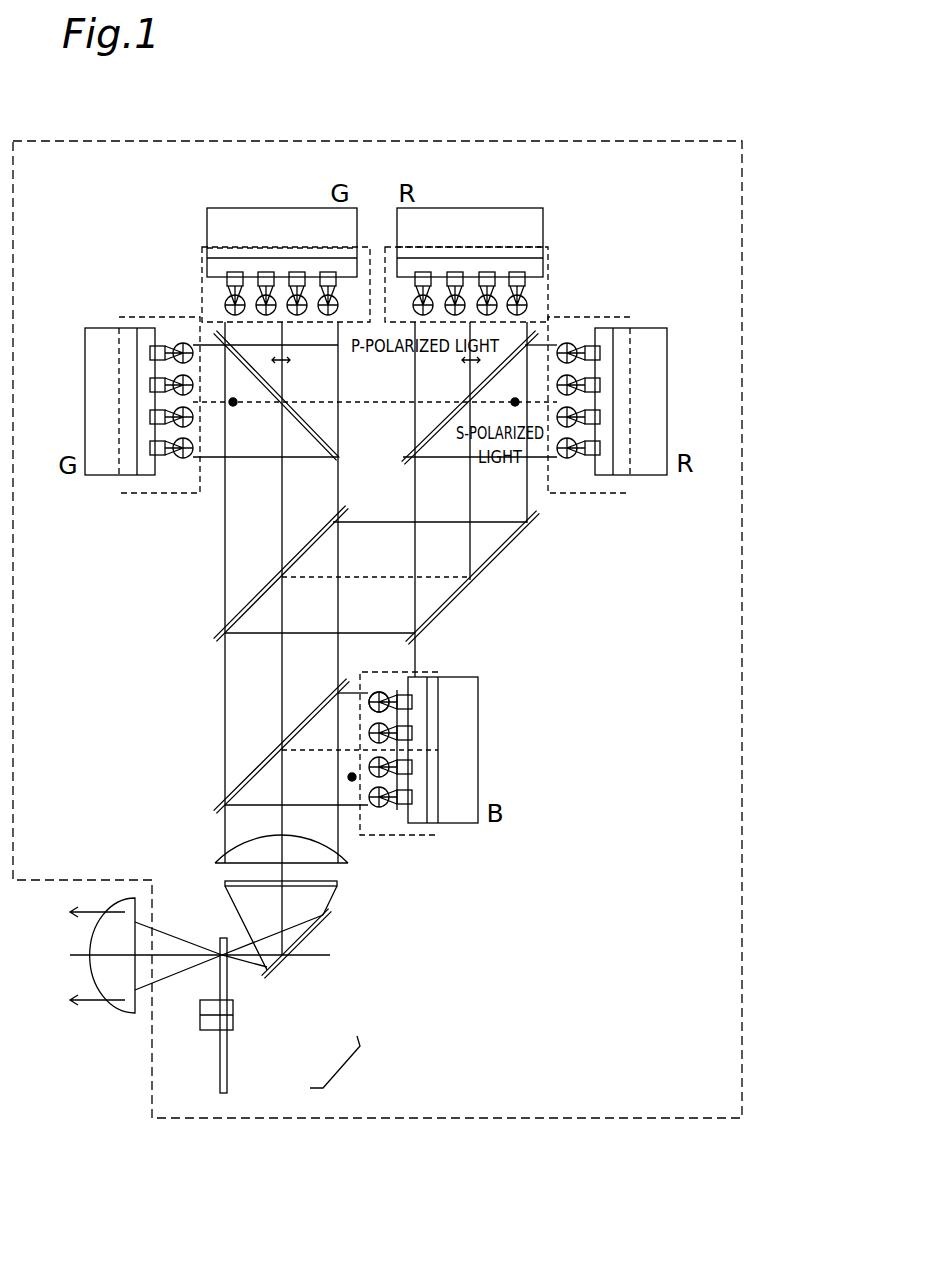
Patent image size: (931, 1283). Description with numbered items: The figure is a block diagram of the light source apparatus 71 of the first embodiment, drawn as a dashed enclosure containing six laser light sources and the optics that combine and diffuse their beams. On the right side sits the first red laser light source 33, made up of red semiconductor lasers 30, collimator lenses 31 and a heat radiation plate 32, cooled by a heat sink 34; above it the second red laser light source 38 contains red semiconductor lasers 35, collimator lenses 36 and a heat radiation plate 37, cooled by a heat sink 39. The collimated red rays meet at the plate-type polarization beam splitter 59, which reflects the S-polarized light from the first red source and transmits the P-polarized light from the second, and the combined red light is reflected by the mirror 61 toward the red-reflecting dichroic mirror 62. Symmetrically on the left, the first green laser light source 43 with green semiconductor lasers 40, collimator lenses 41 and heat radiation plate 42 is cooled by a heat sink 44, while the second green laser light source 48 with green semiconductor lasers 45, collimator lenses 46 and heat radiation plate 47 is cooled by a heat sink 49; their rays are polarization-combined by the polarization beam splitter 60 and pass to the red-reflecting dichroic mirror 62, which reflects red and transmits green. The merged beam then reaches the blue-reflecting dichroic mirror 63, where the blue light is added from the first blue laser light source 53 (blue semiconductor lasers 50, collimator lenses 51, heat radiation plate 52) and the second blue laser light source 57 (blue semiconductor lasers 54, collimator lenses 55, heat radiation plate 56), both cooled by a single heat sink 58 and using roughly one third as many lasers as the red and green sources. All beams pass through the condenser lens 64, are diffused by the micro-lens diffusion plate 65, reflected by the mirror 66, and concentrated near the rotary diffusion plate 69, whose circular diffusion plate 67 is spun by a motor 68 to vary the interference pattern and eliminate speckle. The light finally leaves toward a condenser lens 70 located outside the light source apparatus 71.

The red semiconductor lasers 30 is at (588, 457).
The collimator lenses 31 is at (566, 459).
The heat radiation plate 32 is at (613, 480).
The first red laser light source 33 is at (632, 490).
The heat sink 34 is at (667, 340).
The red semiconductor lasers 35 is at (528, 282).
The collimator lenses 36 is at (530, 307).
The heat radiation plate 37 is at (530, 265).
The second red laser light source 38 is at (523, 247).
The heat sink 39 is at (468, 208).
The green semiconductor lasers 40 is at (155, 467).
The collimator lenses 41 is at (182, 461).
The heat radiation plate 42 is at (150, 478).
The first green laser light source 43 is at (117, 483).
The heat sink 44 is at (85, 370).
The green semiconductor lasers 45 is at (213, 282).
The collimator lenses 46 is at (223, 307).
The heat radiation plate 47 is at (215, 268).
The second green laser light source 48 is at (227, 248).
The heat sink 49 is at (282, 208).
The blue semiconductor lasers 50 is at (414, 800).
The collimator lenses 51 is at (381, 813).
The heat radiation plate 52 is at (393, 820).
The first blue laser light source 53 is at (440, 832).
The blue semiconductor lasers 54 is at (428, 696).
The collimator lenses 55 is at (383, 694).
The heat radiation plate 56 is at (412, 692).
The second blue laser light source 57 is at (442, 722).
The heat sink 58 is at (480, 768).
The polarization beam splitter 59 is at (443, 420).
The polarization beam splitter 60 is at (335, 458).
The mirror 61 is at (463, 582).
The red-reflecting dichroic mirror 62 is at (215, 636).
The blue-reflecting dichroic mirror 63 is at (215, 807).
The condenser lens 64 is at (220, 855).
The diffusion plate 65 is at (225, 883).
The mirror 66 is at (295, 948).
The circular diffusion plate 67 is at (228, 1045).
The motor 68 is at (233, 1015).
The rotary diffusion plate 69 is at (343, 1072).
The condenser lens 70 is at (125, 1013).
The light source apparatus 71 is at (742, 520).